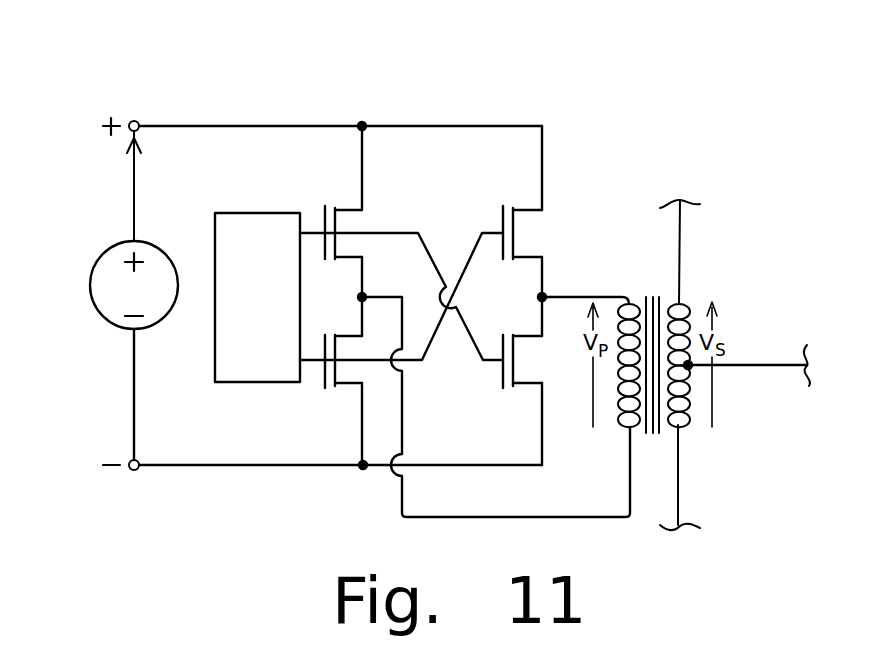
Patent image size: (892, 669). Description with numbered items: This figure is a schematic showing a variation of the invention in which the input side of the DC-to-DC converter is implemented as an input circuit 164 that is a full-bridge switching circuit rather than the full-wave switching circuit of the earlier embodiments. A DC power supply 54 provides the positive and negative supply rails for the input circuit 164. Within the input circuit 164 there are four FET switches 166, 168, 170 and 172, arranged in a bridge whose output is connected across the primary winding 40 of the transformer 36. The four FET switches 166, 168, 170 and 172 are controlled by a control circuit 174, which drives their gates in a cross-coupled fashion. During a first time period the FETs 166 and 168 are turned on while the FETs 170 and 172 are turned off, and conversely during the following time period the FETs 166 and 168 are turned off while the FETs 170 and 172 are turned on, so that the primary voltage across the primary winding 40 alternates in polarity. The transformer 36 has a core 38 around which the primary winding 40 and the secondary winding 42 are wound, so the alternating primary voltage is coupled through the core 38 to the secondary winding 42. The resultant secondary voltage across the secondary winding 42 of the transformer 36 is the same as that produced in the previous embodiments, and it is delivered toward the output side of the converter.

The input circuit 164 is at (608, 63).
The DC power supply 54 is at (97, 262).
The FET switch 170 is at (325, 212).
The FET switch 168 is at (325, 388).
The FET switch 166 is at (502, 220).
The FET switch 172 is at (503, 388).
The control circuit 174 is at (288, 308).
The transformer 36 is at (652, 265).
The primary winding 40 is at (627, 427).
The core 38 is at (655, 435).
The secondary winding 42 is at (675, 427).